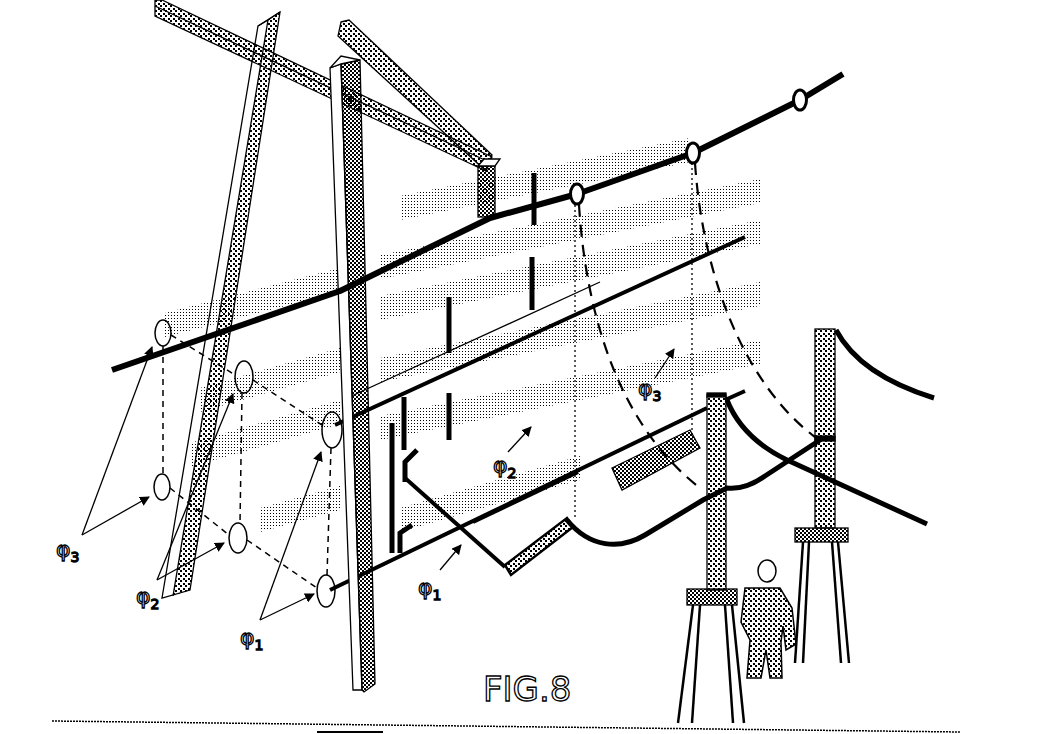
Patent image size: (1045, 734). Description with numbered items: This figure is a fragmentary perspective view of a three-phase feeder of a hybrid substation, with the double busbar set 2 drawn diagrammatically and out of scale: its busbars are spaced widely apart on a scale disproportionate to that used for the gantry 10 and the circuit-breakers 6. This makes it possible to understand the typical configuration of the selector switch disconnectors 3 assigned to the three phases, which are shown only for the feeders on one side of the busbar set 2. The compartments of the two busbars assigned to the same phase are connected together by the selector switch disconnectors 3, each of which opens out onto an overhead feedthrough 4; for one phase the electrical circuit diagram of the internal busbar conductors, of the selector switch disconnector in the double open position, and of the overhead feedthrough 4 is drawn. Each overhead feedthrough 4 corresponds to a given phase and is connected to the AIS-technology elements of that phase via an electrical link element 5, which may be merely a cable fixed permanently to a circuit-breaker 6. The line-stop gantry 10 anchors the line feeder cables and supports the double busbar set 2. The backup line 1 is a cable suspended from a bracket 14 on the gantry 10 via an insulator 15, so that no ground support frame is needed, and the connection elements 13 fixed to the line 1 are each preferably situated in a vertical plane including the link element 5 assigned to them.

The backup line 1 is at (763, 102).
The double busbar set 2 is at (225, 583).
The selector switch disconnectors 3 is at (560, 176).
The overhead feedthrough 4 is at (542, 560).
The electrical link element 5 is at (651, 548).
The circuit-breaker 6 is at (838, 322).
The line-stop gantry 10 is at (215, 176).
The connection elements 13 is at (592, 195).
The bracket 14 is at (423, 88).
The insulator 15 is at (498, 176).